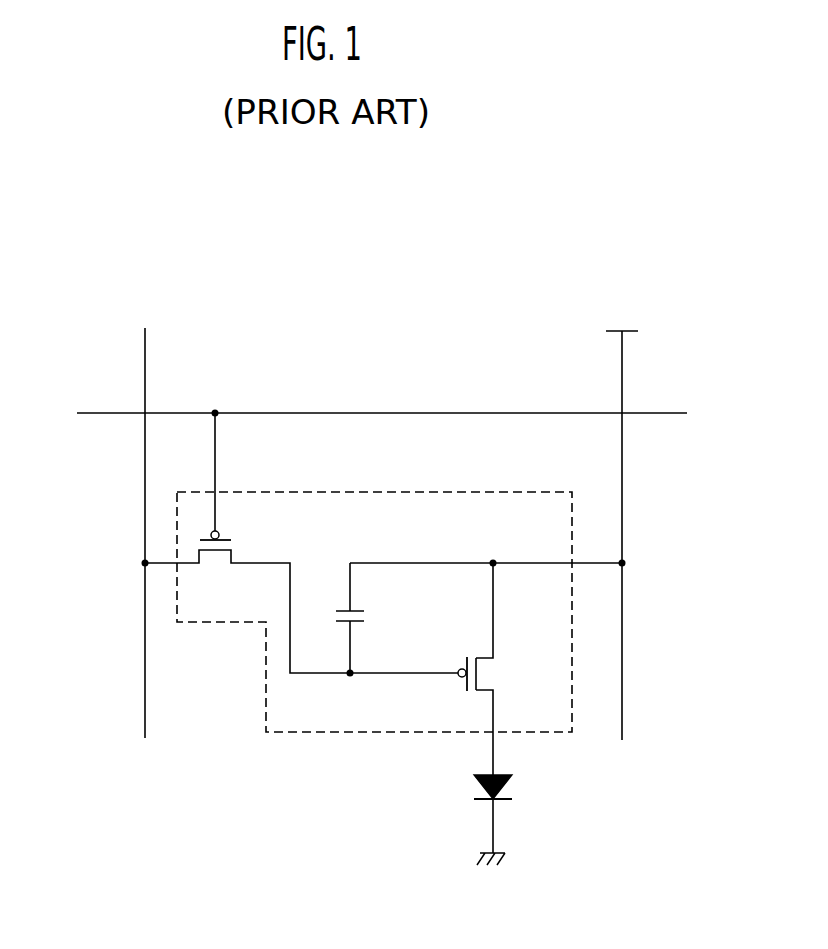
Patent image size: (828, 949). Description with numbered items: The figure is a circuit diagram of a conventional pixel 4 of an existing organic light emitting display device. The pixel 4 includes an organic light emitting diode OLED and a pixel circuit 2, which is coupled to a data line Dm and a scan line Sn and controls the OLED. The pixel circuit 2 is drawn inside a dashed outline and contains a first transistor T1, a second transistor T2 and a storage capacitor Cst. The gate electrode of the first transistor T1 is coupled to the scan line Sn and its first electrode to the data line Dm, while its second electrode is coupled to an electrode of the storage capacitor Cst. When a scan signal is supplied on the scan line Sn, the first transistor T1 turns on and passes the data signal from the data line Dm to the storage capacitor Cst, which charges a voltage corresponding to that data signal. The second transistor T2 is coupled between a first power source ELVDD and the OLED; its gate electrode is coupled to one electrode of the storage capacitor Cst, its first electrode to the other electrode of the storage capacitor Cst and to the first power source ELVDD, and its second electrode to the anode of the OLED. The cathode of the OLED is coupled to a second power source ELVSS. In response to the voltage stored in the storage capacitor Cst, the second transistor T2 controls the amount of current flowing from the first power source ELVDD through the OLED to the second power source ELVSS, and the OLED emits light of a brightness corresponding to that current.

The pixel circuit 2 is at (363, 492).
The pixel 4 is at (312, 334).
The first transistor T1 is at (247, 543).
The second transistor T2 is at (439, 708).
The storage capacitor Cst is at (370, 618).
The organic light emitting diode OLED is at (523, 790).
The data line Dm is at (146, 355).
The scan line Sn is at (112, 416).
The first power source ELVDD is at (622, 517).
The second power source ELVSS is at (487, 878).